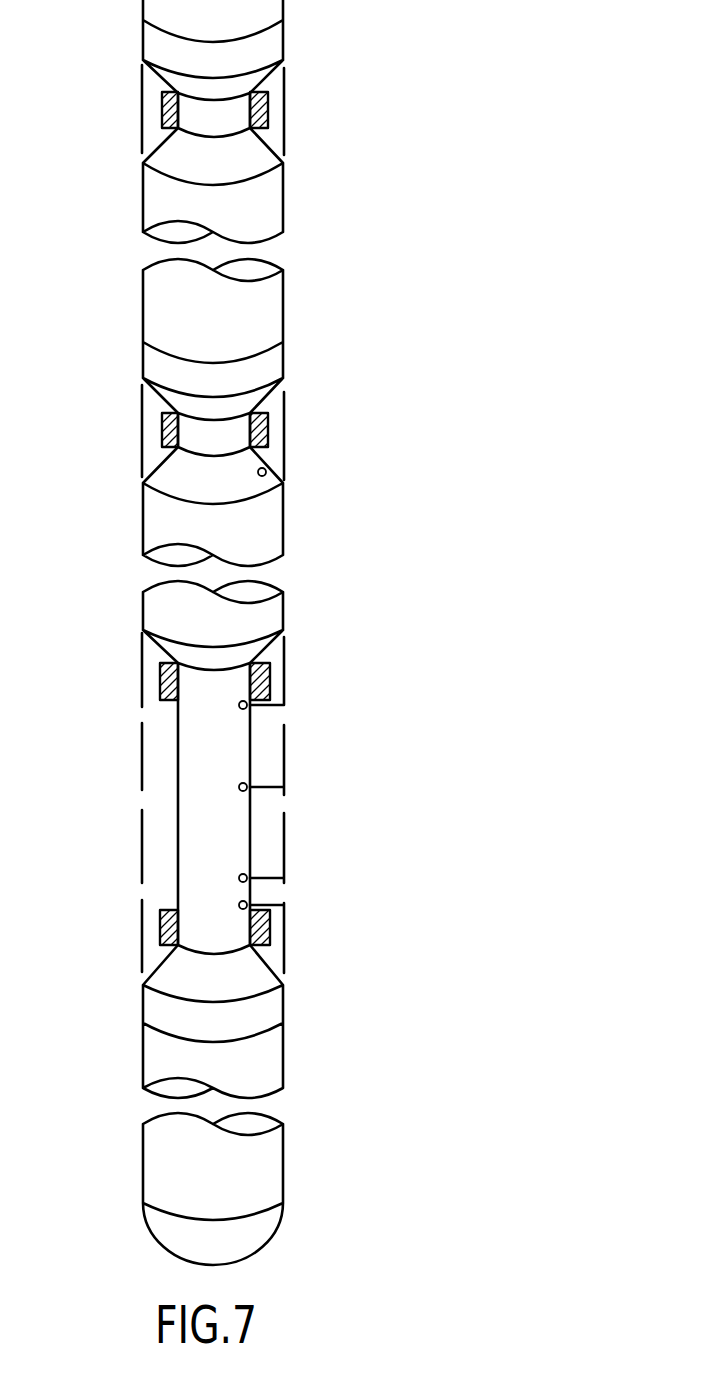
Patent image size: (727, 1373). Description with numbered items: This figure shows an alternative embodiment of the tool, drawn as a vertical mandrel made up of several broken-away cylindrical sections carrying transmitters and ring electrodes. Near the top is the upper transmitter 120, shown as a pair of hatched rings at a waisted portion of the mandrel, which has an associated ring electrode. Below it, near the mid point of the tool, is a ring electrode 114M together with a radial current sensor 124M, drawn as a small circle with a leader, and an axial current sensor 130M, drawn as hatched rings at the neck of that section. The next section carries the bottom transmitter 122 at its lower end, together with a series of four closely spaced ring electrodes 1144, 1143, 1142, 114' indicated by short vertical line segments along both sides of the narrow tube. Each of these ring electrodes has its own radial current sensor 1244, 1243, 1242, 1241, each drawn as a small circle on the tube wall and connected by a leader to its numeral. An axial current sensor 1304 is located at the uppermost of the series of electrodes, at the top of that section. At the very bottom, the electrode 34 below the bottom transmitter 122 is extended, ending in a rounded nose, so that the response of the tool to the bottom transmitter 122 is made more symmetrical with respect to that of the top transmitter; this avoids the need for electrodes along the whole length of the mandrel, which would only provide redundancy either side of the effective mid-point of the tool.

The electrode 34 is at (285, 1187).
The upper transmitter 120 is at (267, 110).
The bottom transmitter 122 is at (270, 933).
The ring electrode 114M is at (283, 133).
The axial current sensor 130M is at (267, 425).
The radial current sensor 124M is at (263, 476).
The axial current sensor 1304 is at (270, 670).
The ring electrode 1144 is at (283, 682).
The ring electrode 1143 is at (285, 757).
The ring electrode 1142 is at (285, 852).
The ring electrode 114' is at (248, 929).
The radial current sensor 1244 is at (239, 707).
The radial current sensor 1243 is at (239, 789).
The radial current sensor 1242 is at (239, 878).
The radial current sensor 1241 is at (239, 908).